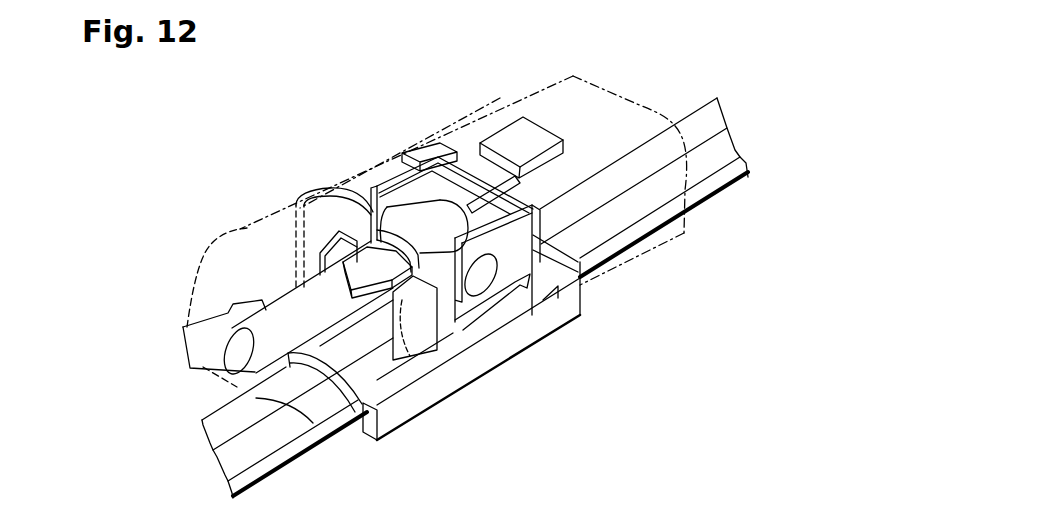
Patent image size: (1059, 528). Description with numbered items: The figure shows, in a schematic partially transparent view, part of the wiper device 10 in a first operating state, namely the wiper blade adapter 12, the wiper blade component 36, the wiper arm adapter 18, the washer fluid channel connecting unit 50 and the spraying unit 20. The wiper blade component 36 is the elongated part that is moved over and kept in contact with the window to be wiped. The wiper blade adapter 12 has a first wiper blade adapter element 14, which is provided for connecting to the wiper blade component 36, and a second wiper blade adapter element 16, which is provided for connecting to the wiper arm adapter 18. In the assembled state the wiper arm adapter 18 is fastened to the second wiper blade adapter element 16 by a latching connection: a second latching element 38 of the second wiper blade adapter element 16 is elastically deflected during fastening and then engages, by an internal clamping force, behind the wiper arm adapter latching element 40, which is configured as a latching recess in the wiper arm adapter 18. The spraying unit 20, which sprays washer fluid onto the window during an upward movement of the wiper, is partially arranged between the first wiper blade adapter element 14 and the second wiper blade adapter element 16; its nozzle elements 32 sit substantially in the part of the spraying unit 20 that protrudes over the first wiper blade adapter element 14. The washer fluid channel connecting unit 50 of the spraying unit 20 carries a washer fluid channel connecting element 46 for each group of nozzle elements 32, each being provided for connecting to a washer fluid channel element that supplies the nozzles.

The wiper device 10 is at (740, 63).
The wiper blade adapter 12 is at (468, 406).
The first wiper blade adapter element 14 is at (543, 318).
The second wiper blade adapter element 16 is at (240, 246).
The wiper arm adapter 18 is at (582, 97).
The spraying unit 20 is at (157, 314).
The nozzle elements 32 is at (197, 348).
The wiper blade component 36 is at (737, 215).
The second latching element 38 is at (496, 147).
The wiper arm adapter latching element 40 is at (500, 112).
The washer fluid channel connecting element 46 is at (417, 225).
The washer fluid channel connecting unit 50 is at (413, 196).